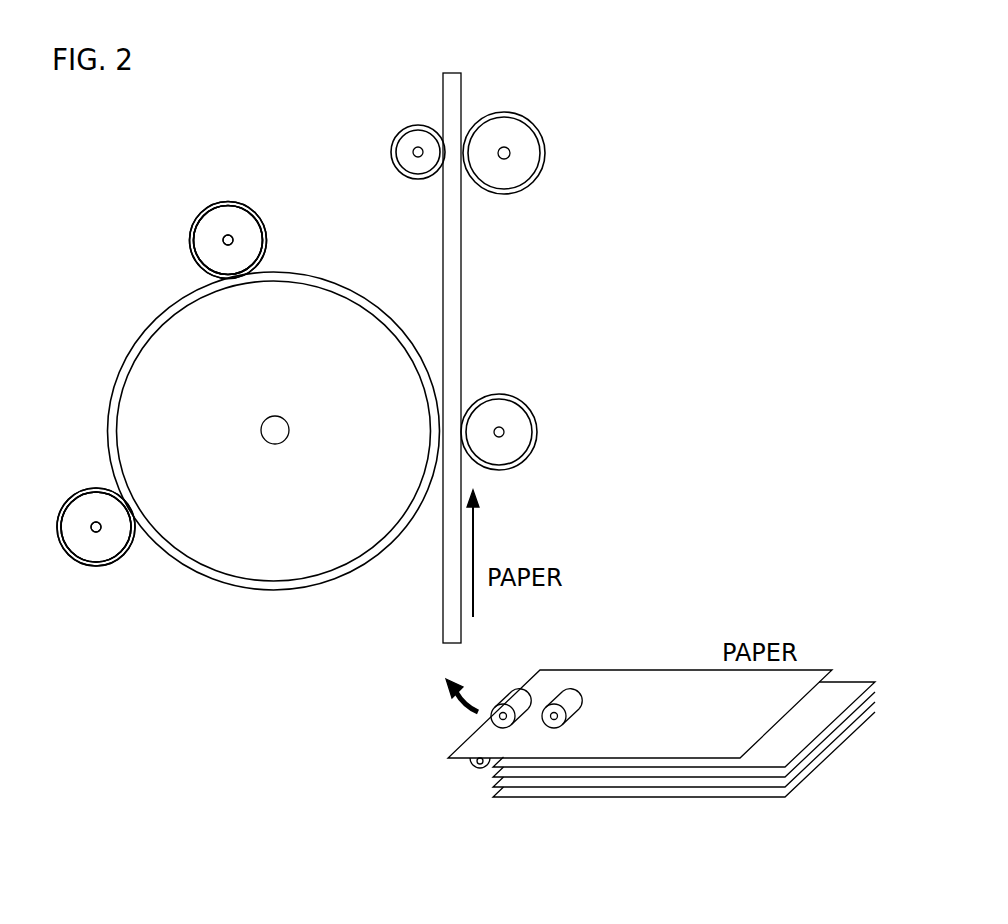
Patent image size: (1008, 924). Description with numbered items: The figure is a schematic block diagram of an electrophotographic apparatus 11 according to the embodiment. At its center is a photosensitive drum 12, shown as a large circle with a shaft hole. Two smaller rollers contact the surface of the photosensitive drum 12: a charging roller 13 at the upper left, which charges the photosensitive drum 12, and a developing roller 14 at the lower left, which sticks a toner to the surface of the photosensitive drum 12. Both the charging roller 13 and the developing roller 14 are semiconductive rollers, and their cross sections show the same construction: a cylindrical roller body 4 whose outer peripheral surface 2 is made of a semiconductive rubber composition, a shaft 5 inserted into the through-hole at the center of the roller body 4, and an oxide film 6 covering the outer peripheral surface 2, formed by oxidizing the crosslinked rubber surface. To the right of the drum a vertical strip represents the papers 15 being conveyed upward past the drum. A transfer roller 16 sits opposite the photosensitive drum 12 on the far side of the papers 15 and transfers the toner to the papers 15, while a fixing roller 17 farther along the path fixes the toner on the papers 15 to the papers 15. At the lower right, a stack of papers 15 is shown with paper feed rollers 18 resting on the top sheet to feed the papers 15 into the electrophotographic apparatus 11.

The outer peripheral surface 2 is at (200, 217).
The roller body 4 is at (200, 243).
The shaft 5 is at (232, 240).
The oxide film 6 is at (255, 218).
The electrophotographic apparatus 11 is at (462, 893).
The photosensitive drum 12 is at (271, 570).
The charging roller 13 is at (230, 190).
The developing roller 14 is at (87, 570).
The papers 15 is at (455, 262).
The transfer roller 16 is at (519, 432).
The fixing roller 17 is at (533, 153).
The paper feed rollers 18 is at (566, 697).